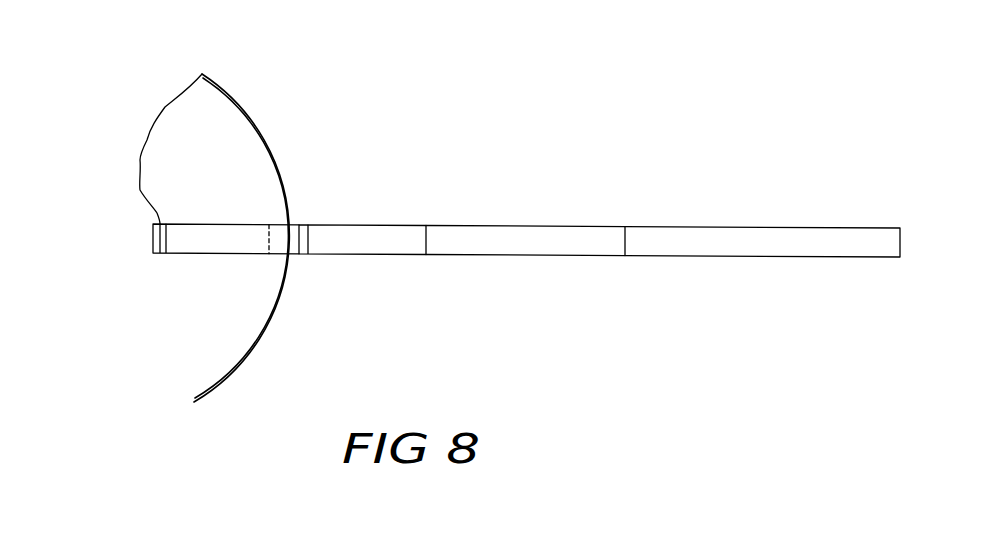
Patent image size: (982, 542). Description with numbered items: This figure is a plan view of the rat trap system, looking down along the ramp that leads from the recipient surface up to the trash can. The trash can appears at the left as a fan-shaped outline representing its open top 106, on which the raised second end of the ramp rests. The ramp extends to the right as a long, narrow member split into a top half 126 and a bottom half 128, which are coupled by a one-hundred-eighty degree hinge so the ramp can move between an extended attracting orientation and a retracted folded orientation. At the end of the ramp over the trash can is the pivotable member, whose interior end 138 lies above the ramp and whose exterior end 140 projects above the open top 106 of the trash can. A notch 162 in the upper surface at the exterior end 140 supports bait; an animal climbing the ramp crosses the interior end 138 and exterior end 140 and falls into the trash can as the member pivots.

The open top 106 is at (233, 107).
The notch 162 is at (194, 402).
The exterior end 140 is at (240, 235).
The interior end 138 is at (385, 235).
The top half 126 is at (538, 233).
The bottom half 128 is at (730, 232).